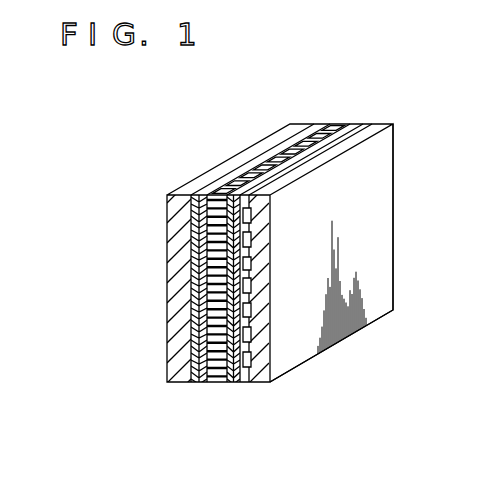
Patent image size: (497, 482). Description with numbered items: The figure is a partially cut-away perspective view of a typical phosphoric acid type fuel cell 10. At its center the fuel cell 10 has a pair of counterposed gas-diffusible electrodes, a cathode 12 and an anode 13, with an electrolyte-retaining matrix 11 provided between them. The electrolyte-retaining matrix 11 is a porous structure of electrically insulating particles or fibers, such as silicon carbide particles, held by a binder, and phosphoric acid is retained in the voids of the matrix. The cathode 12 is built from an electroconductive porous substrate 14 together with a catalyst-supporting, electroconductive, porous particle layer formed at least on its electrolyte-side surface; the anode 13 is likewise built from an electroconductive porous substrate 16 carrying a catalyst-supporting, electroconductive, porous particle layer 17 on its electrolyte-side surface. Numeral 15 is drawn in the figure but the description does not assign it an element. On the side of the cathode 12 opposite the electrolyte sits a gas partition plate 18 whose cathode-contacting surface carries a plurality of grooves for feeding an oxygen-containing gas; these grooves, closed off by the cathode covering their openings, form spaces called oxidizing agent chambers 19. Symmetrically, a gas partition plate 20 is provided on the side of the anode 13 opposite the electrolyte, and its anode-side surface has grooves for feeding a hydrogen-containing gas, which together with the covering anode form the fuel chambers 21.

The fuel cell 10 is at (340, 123).
The electrolyte-retaining matrix 11 is at (216, 383).
The cathode 12 is at (207, 385).
The anode 13 is at (244, 385).
The electroconductive porous substrate 14 is at (192, 197).
The intermediate layer 15 is at (197, 215).
The electroconductive porous substrate 16 is at (248, 204).
The catalyst-supporting electroconductive porous particle layer 17 is at (238, 256).
The gas partition plate 18 is at (167, 302).
The oxidizing agent chambers 19 is at (292, 123).
The gas partition plate 20 is at (388, 268).
The fuel chambers 21 is at (249, 360).